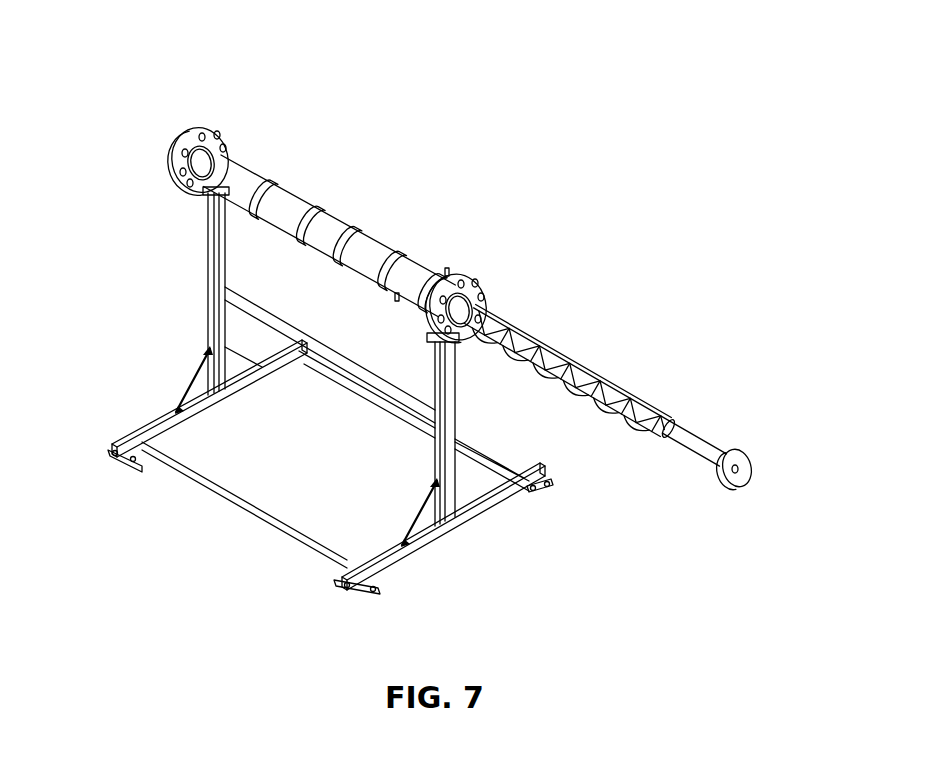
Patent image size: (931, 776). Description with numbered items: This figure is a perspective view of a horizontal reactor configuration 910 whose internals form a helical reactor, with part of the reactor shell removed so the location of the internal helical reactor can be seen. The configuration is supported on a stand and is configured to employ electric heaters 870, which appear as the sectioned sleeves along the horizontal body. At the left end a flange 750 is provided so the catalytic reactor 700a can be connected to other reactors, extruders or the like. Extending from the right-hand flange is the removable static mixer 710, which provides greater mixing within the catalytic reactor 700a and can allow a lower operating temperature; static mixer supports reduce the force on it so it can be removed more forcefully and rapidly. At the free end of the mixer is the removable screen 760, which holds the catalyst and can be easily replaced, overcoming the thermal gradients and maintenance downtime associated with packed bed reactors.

The horizontal reactor configuration 910 is at (279, 84).
The flange 750 is at (172, 170).
The electric heaters 870 is at (300, 202).
The catalytic reactor 700a is at (766, 456).
The static mixer 710 is at (562, 350).
The removable screen 760 is at (702, 444).